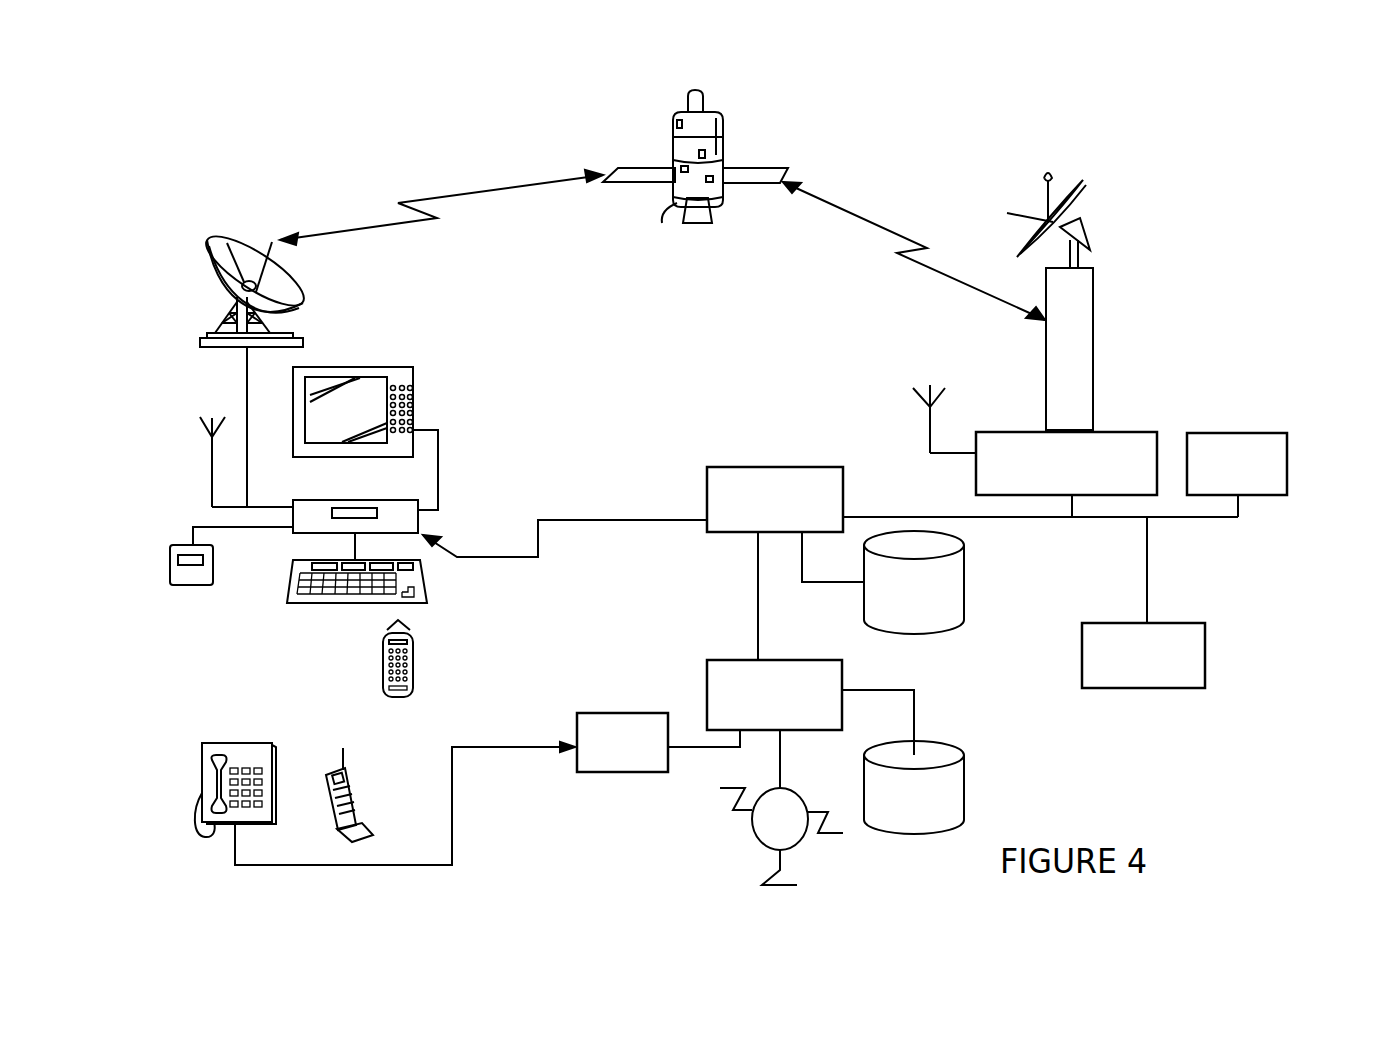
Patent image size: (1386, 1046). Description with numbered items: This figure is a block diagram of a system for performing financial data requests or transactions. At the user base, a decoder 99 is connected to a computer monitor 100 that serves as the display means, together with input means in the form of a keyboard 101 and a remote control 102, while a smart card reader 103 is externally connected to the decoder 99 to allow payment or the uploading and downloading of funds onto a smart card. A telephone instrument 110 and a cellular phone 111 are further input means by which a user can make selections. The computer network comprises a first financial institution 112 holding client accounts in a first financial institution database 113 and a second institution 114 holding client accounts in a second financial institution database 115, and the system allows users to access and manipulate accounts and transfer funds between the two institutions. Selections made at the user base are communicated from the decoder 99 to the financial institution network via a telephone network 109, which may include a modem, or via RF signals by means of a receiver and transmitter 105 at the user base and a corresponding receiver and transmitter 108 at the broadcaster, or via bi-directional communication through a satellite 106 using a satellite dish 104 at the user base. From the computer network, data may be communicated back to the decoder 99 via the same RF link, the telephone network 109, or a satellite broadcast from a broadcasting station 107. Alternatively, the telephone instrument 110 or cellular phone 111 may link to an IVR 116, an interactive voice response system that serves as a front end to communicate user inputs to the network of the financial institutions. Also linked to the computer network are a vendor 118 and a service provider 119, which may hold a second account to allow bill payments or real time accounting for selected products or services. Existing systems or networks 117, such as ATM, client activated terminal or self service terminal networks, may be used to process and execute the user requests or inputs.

The decoder 99 is at (420, 522).
The computer monitor 100 is at (370, 393).
The keyboard 101 is at (332, 603).
The remote control 102 is at (413, 660).
The smart card reader 103 is at (215, 567).
The satellite dish 104 is at (226, 251).
The receiver and transmitter 105 is at (213, 420).
The satellite 106 is at (695, 172).
The broadcasting station 107 is at (1120, 430).
The receiver and transmitter 108 is at (917, 395).
The telephone network 109 is at (582, 520).
The telephone instrument 110 is at (235, 743).
The cellular phone 111 is at (353, 807).
The first financial institution 112 is at (738, 467).
The first financial institution database 113 is at (959, 567).
The second institution 114 is at (810, 660).
The second financial institution database 115 is at (940, 743).
The IVR 116 is at (625, 717).
The existing systems or networks 117 is at (758, 843).
The vendor 118 is at (1290, 463).
The service provider 119 is at (1207, 655).